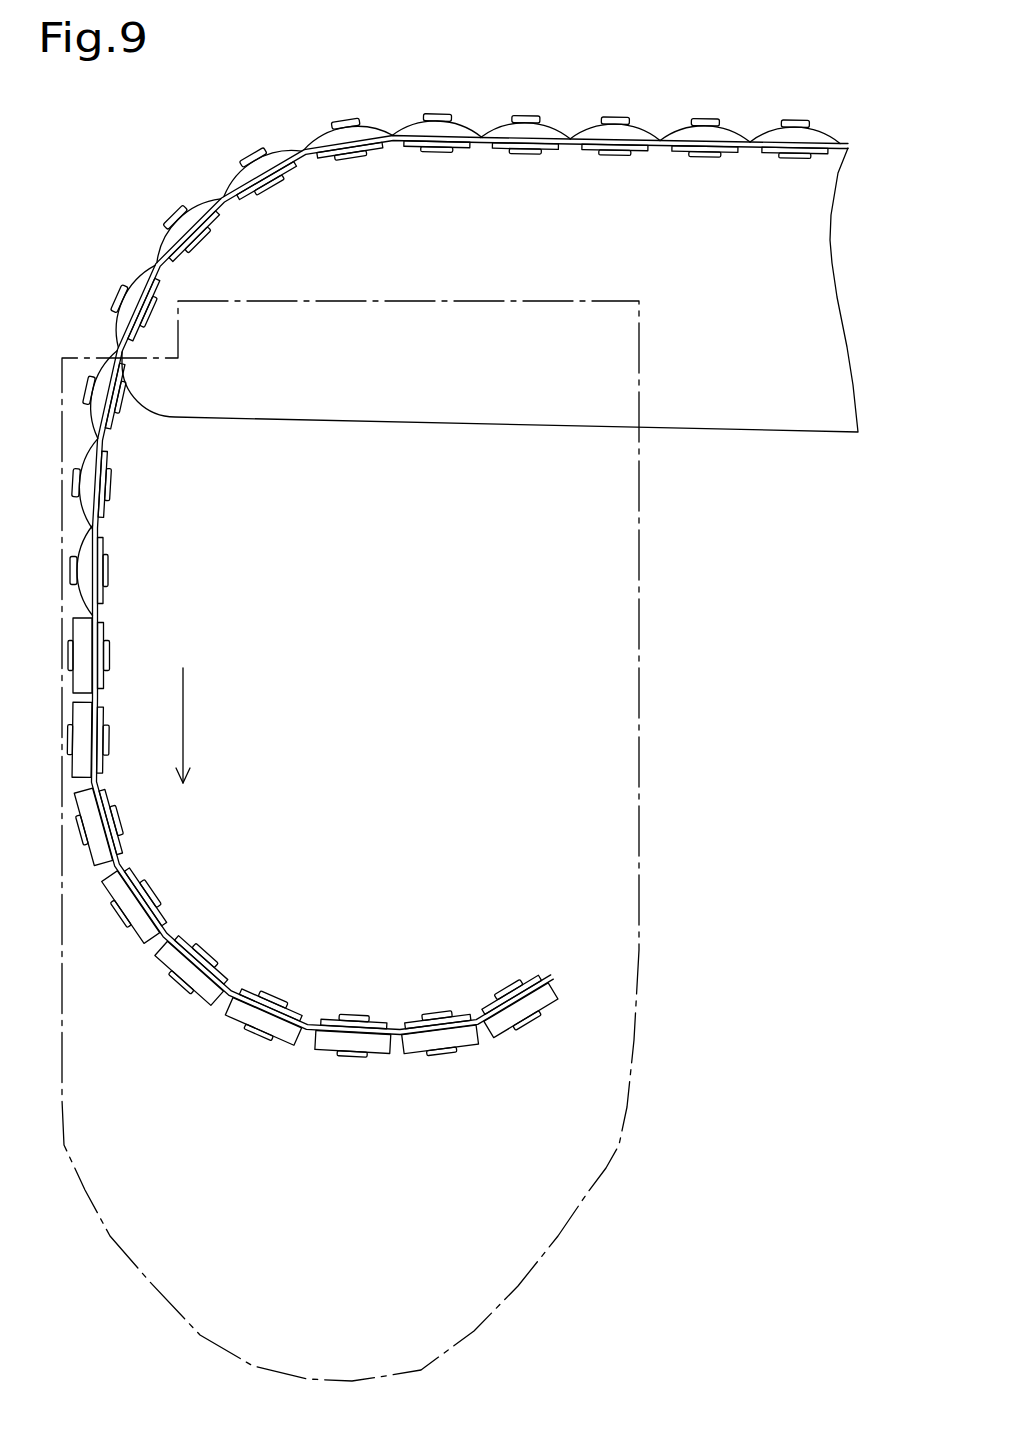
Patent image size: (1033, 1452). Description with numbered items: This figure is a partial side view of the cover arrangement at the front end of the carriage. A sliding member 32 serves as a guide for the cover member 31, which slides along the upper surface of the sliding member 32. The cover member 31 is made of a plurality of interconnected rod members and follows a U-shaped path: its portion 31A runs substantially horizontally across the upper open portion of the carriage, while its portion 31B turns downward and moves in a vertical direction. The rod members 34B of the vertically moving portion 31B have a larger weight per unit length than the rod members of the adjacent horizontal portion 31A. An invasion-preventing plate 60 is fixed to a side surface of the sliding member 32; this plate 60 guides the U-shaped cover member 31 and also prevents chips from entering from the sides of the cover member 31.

The cover member 31 is at (220, 141).
The portion of the cover member moving in a substantially horizontal direction 31A is at (411, 122).
The portion of the cover member moving in a vertical direction 31B is at (314, 865).
The sliding member 32 is at (679, 428).
The rod member 34B is at (330, 1046).
The invasion-preventing plate 60 is at (640, 663).